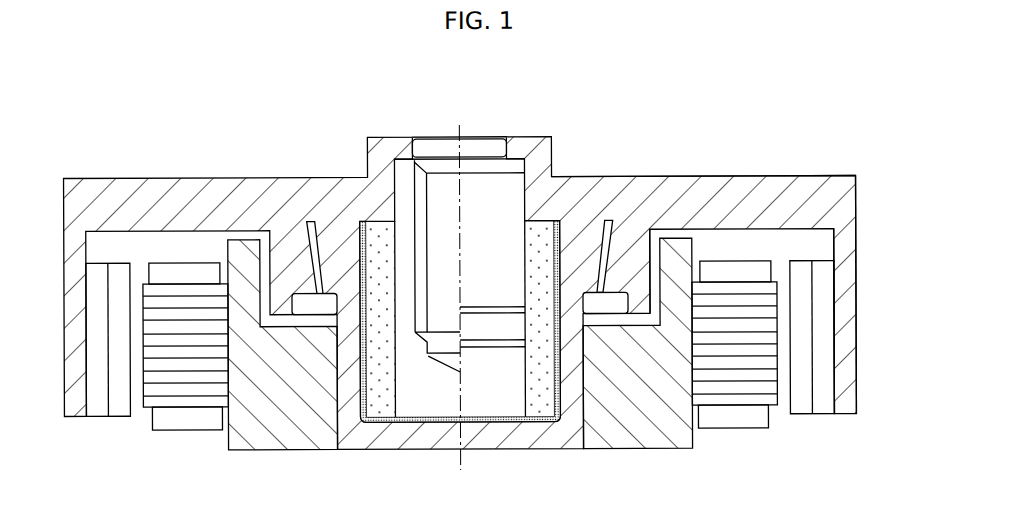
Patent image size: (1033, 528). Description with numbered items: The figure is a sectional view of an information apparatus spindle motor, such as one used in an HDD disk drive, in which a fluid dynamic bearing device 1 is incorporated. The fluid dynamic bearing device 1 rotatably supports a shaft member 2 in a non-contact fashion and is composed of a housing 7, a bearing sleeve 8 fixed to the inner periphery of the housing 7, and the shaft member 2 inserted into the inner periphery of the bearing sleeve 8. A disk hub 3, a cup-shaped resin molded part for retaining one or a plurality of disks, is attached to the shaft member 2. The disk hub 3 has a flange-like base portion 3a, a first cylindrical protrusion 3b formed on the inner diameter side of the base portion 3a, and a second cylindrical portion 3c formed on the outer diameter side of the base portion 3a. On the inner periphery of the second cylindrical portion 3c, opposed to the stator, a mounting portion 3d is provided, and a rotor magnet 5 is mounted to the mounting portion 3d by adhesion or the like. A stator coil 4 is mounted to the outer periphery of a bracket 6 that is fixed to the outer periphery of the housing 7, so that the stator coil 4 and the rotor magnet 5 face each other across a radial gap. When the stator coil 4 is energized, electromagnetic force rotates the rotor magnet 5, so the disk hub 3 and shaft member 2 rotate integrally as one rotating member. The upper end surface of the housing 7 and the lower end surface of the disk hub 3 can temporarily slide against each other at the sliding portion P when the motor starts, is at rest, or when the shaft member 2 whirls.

The fluid dynamic bearing device 1 is at (545, 213).
The shaft member 2 is at (527, 187).
The disk hub 3 is at (235, 176).
The base portion 3a is at (740, 187).
The first cylindrical protrusion 3b is at (640, 282).
The second cylindrical portion 3c is at (858, 283).
The mounting portion 3d is at (832, 368).
The stator coil 4 is at (740, 396).
The rotor magnet 5 is at (807, 406).
The bracket 6 is at (648, 444).
The housing 7 is at (335, 235).
The bearing sleeve 8 is at (558, 262).
The sliding portion P is at (578, 225).